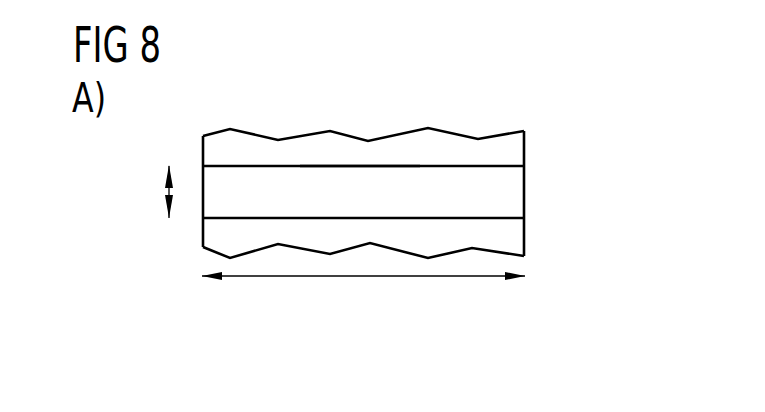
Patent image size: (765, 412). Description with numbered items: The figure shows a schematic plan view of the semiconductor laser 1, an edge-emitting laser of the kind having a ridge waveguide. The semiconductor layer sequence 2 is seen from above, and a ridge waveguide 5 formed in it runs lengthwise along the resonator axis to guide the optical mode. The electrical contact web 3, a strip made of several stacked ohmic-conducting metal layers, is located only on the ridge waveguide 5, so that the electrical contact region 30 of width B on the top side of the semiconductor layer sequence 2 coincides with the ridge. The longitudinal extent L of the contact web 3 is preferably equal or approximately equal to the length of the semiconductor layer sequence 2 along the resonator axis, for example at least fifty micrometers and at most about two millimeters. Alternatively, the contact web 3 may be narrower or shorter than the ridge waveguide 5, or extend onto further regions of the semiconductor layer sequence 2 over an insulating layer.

The semiconductor laser 1 is at (578, 113).
The semiconductor layer sequence 2 is at (511, 149).
The electrical contact web 3 is at (511, 195).
The ridge waveguide 5 is at (322, 155).
The electrical contact region 30 is at (167, 191).
The longitudinal extent L is at (375, 277).